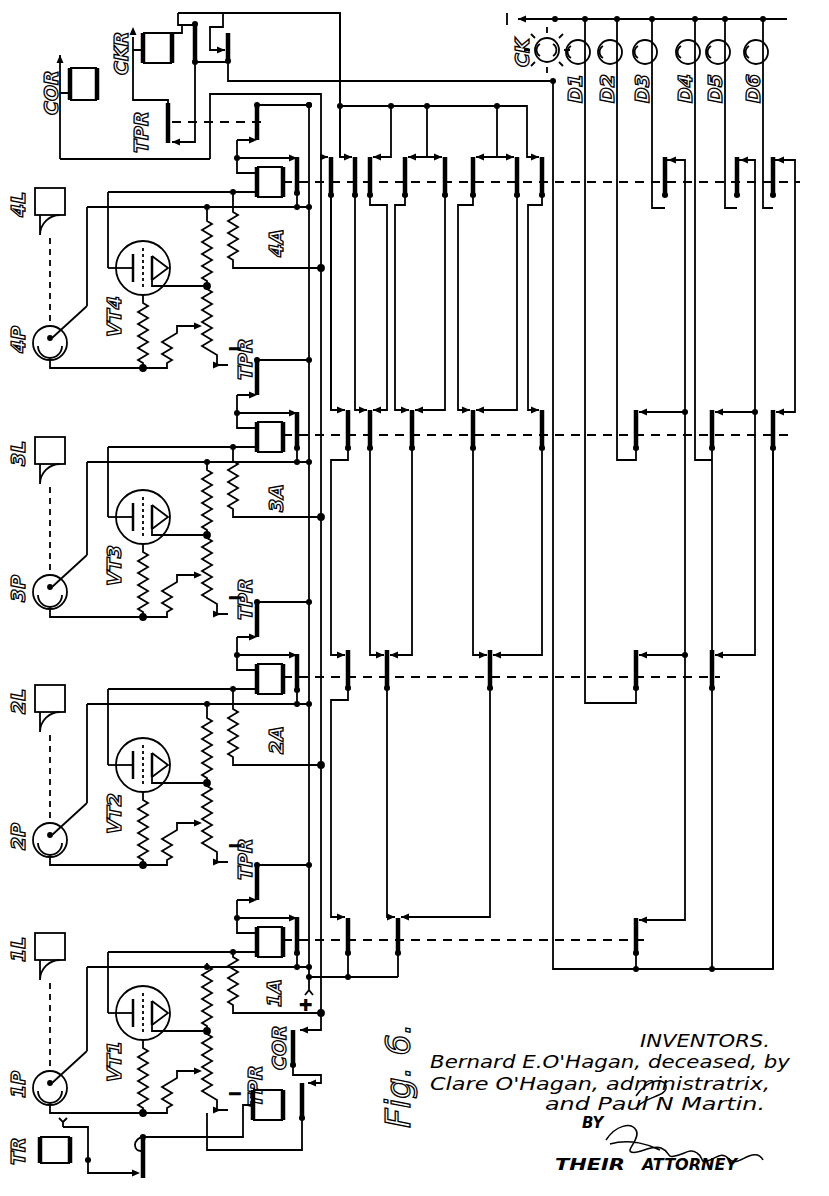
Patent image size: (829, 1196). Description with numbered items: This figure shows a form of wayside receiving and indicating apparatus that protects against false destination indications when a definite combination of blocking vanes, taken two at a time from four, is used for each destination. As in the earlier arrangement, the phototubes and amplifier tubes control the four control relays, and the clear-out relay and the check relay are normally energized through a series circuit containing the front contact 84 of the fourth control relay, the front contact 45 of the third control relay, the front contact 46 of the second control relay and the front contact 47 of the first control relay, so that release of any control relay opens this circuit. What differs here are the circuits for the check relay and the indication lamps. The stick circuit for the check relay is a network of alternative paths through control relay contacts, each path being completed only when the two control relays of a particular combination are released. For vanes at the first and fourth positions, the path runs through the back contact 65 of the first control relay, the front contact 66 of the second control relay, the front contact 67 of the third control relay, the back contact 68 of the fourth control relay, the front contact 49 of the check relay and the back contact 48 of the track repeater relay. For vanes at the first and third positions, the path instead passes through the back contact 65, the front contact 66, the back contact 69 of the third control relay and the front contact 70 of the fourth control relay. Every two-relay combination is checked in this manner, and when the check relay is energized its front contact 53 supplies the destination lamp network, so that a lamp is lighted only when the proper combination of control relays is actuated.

The front contact of relay 4A 84 is at (340, 157).
The front contact of relay 3A 45 is at (347, 408).
The front contact of relay 2A 46 is at (347, 650).
The front contact of relay 1A 47 is at (347, 915).
The back contact of relay 1A 65 is at (398, 917).
The front contact of relay 2A 66 is at (490, 650).
The front contact of relay 3A 67 is at (465, 408).
The back contact of relay 4A 68 is at (475, 157).
The back contact of relay 3A 69 is at (484, 408).
The front contact of relay 4A 70 is at (513, 157).
The back contact of relay TPR 48 is at (172, 124).
The front contact of relay CKR 49 is at (192, 60).
The front contact of relay CKR 53 is at (236, 48).